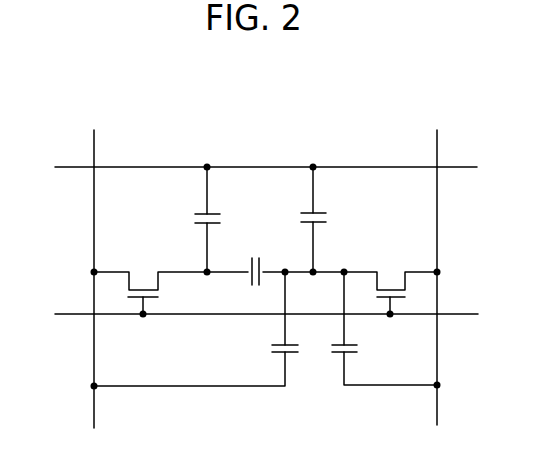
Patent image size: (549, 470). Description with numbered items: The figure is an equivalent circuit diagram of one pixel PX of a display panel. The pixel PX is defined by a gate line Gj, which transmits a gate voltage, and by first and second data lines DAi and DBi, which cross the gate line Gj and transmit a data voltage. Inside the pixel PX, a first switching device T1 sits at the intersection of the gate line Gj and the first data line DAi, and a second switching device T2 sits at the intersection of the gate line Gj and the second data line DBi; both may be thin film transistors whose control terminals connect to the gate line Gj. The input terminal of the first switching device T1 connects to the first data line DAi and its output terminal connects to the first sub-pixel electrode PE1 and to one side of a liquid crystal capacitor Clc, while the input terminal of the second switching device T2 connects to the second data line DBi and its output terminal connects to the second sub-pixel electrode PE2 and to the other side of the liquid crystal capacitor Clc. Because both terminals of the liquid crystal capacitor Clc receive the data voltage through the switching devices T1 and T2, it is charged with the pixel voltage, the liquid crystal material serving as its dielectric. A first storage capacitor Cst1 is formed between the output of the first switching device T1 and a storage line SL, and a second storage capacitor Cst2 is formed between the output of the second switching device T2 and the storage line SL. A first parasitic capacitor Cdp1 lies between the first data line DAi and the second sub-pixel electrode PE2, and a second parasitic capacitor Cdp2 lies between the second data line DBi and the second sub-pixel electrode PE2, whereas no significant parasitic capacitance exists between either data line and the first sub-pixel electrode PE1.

The pixel PX is at (386, 74).
The storage line SL is at (255, 171).
The gate line Gj is at (255, 315).
The first data line DAi is at (93, 271).
The second data line DBi is at (433, 268).
The first switching device T1 is at (150, 291).
The second switching device T2 is at (390, 291).
The first storage capacitor Cst1 is at (192, 219).
The second storage capacitor Cst2 is at (329, 219).
The liquid crystal capacitor Clc is at (252, 280).
The first parasitic capacitor Cdp1 is at (196, 329).
The second parasitic capacitor Cdp2 is at (384, 328).
The first sub-pixel electrode PE1 is at (222, 282).
The second sub-pixel electrode PE2 is at (303, 282).